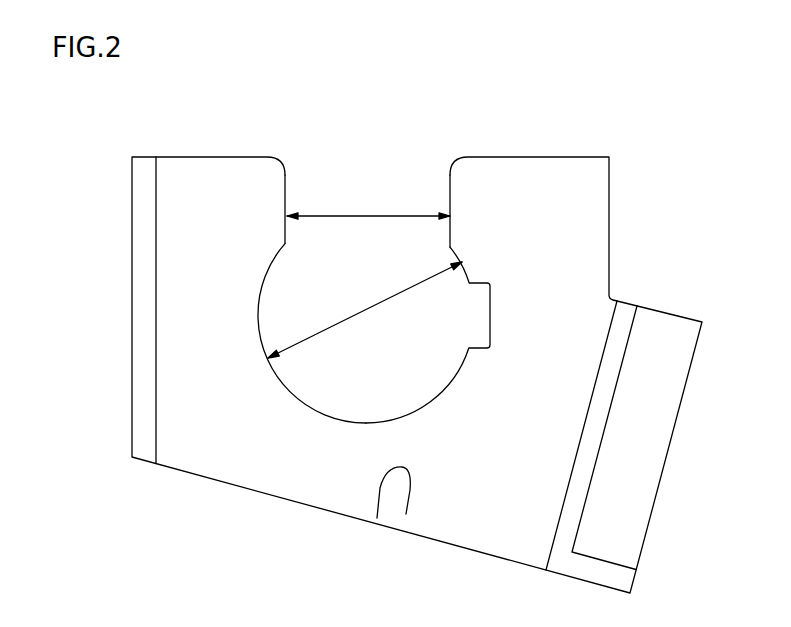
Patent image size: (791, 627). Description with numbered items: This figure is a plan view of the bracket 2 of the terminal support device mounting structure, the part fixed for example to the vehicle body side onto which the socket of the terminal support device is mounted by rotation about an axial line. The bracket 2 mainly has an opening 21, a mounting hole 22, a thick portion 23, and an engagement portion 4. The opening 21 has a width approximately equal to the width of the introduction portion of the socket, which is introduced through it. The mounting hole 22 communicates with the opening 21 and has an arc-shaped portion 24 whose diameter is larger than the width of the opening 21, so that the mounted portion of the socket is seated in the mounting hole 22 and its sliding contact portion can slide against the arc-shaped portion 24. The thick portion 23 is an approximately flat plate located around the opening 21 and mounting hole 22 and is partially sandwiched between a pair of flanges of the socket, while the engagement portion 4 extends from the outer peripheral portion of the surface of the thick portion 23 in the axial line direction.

The bracket 2 is at (393, 329).
The opening 21 is at (347, 192).
The mounting hole 22 is at (430, 367).
The thick portion 23 is at (263, 373).
The arc-shaped portion 24 is at (324, 416).
The engagement portion 4 is at (393, 508).